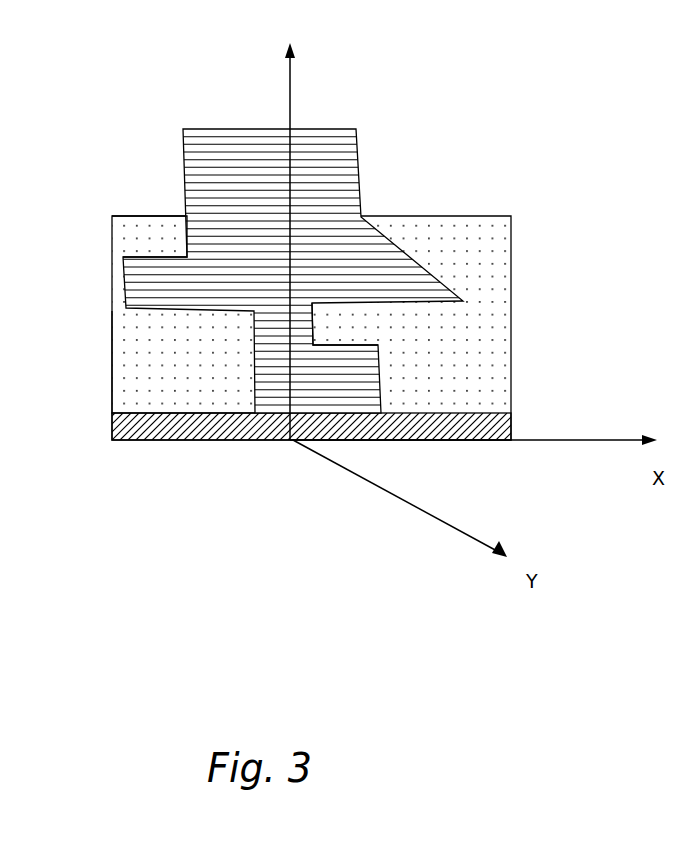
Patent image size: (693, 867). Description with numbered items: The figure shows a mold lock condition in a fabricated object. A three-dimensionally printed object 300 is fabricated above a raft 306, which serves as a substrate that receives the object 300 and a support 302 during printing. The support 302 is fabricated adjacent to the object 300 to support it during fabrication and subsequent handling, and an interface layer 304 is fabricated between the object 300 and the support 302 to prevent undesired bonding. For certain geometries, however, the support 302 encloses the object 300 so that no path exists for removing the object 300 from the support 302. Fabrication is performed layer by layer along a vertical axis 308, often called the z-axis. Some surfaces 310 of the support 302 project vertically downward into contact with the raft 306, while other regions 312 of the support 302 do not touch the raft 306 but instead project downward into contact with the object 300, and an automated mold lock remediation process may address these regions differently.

The object 300 is at (182, 145).
The support 302 is at (497, 215).
The interface layer 304 is at (396, 317).
The raft 306 is at (511, 433).
The vertical axis 308 is at (290, 97).
The surfaces of the support 310 is at (145, 412).
The regions of the support 312 is at (142, 253).